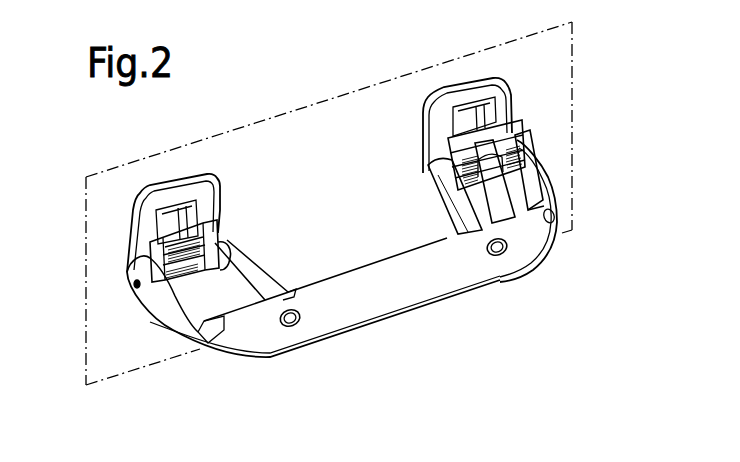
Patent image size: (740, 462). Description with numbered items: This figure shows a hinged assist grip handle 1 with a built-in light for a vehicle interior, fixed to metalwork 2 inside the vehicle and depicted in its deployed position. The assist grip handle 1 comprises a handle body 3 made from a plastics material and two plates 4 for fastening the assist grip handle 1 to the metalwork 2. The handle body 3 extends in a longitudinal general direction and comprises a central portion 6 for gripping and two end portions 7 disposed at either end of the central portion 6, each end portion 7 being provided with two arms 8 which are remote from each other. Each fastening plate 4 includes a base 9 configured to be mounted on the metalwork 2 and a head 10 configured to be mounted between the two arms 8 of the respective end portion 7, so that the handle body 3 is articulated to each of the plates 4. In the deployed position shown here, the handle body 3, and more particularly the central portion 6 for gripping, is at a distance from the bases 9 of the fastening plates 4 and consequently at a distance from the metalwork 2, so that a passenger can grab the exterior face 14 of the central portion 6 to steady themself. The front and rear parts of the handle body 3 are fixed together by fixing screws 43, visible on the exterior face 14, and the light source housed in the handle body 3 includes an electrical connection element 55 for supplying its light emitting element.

The hinged assist grip handle 1 is at (327, 205).
The metalwork 2 is at (563, 54).
The handle body 3 is at (312, 346).
The fastening plate 4 is at (215, 192).
The central portion for gripping 6 is at (425, 298).
The end portion 7 is at (168, 340).
The arm 8 is at (163, 308).
The base 9 is at (140, 205).
The head 10 is at (140, 252).
The exterior face 14 is at (358, 278).
The fixing screw 43 is at (300, 316).
The electrical connection element 55 is at (535, 213).